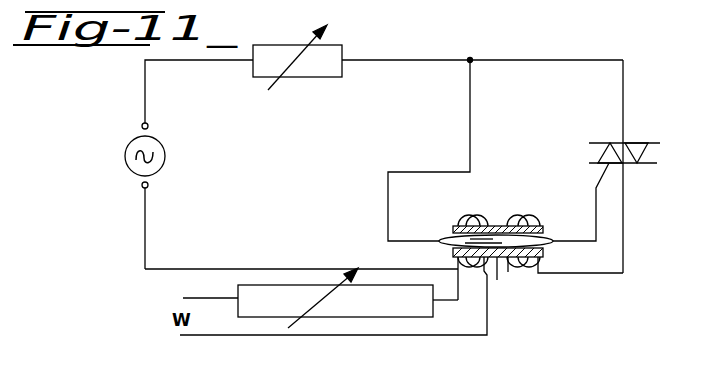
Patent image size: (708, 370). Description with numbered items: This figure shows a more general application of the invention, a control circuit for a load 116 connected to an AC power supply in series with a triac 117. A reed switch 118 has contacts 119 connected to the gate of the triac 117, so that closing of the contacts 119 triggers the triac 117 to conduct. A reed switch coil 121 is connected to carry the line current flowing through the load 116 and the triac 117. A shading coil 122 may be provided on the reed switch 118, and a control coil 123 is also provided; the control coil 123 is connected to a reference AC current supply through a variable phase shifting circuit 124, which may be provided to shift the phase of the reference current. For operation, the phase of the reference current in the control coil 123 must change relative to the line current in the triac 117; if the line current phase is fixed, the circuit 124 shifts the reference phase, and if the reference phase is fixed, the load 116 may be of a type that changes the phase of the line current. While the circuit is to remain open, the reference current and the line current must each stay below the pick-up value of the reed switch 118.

The load 116 is at (342, 50).
The triac 117 is at (651, 135).
The reed switch 118 is at (536, 214).
The contacts 119 is at (497, 280).
The reed switch coil 121 is at (538, 219).
The shading coil 122 is at (501, 224).
The control coil 123 is at (463, 216).
The variable phase shifting circuit 124 is at (273, 285).